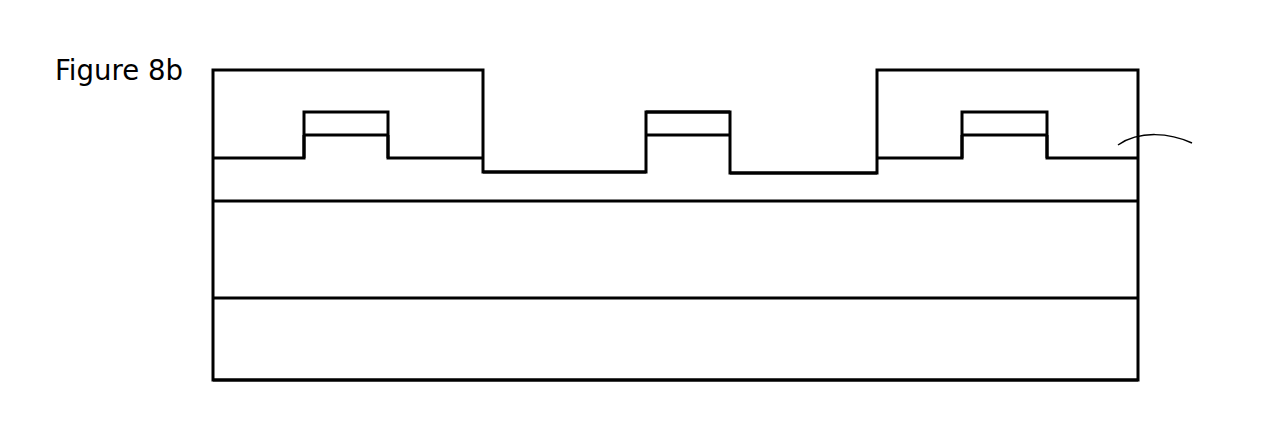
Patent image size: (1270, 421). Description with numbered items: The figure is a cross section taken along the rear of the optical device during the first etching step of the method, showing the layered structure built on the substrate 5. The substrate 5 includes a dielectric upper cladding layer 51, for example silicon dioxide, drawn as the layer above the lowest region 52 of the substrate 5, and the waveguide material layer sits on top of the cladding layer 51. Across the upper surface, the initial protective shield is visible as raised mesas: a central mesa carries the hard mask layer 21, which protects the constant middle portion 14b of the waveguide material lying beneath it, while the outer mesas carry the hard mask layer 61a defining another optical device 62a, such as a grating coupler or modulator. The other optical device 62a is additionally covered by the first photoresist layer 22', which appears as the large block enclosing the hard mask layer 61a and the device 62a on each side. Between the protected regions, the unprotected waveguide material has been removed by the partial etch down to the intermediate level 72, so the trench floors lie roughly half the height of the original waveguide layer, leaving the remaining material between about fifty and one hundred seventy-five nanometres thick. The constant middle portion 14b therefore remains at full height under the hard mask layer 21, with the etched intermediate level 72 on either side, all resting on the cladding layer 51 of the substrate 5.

The substrate 5 is at (1205, 207).
The first photoresist layer 22' is at (712, 79).
The hard mask layer 61a is at (354, 120).
The other optical device 62a is at (375, 148).
The intermediate level 72 is at (576, 172).
The hard mask layer 21 is at (685, 114).
The constant middle portion 14b is at (718, 155).
The dielectric upper cladding layer 51 is at (675, 249).
The substrate 52 is at (675, 352).